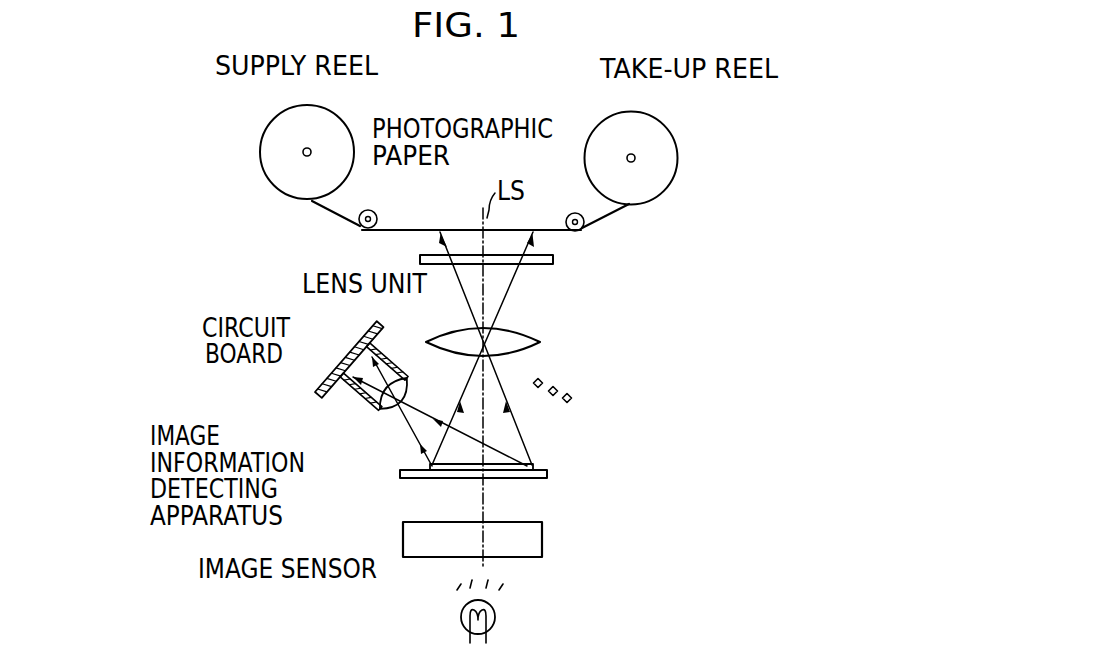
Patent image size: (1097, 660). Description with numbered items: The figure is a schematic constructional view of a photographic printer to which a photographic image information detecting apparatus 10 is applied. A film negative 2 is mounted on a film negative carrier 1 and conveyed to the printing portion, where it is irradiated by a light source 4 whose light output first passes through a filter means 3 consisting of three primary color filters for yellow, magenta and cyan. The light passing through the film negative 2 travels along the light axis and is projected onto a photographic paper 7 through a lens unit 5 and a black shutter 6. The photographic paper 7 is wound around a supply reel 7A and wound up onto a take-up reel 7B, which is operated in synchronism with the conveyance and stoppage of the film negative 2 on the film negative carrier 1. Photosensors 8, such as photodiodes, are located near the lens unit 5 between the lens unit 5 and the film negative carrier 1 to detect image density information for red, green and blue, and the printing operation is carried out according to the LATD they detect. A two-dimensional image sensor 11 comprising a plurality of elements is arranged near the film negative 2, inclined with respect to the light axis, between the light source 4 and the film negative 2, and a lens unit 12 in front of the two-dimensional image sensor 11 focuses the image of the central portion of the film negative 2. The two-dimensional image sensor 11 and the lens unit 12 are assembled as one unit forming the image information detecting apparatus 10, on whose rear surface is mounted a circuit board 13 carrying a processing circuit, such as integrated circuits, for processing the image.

The film negative carrier 1 is at (548, 475).
The film negative 2 is at (508, 465).
The filter means 3 is at (563, 510).
The light source 4 is at (500, 612).
The lens unit 5 is at (517, 330).
The black shutter 6 is at (556, 262).
The photographic paper 7 is at (393, 230).
The supply reel 7A is at (277, 122).
The take-up reel 7B is at (640, 122).
The photosensors 8 is at (537, 360).
The image information detecting apparatus 10 is at (379, 429).
The two-dimensional image sensor 11 is at (362, 368).
The lens unit 12 is at (404, 388).
The circuit board 13 is at (343, 357).